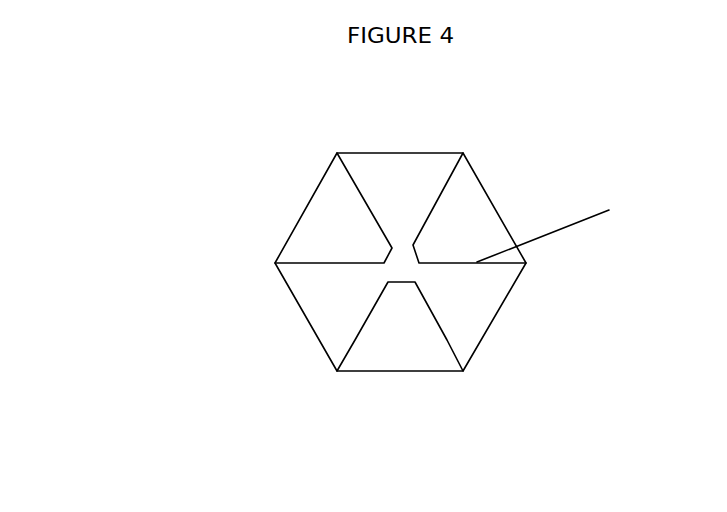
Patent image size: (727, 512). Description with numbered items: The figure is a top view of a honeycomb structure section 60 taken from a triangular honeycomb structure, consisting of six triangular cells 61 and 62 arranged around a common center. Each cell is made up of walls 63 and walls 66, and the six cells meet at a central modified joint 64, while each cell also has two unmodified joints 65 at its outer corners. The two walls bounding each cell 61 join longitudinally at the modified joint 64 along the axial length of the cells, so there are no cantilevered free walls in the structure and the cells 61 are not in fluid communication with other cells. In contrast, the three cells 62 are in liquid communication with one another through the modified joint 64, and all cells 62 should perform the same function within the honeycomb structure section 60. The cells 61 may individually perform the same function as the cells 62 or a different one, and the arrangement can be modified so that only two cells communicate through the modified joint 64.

The honeycomb structure section 60 is at (185, 225).
The triangular cell 61 is at (400, 262).
The triangular cell 62 is at (407, 250).
The wall 63 is at (362, 192).
The modified joint 64 is at (397, 265).
The unmodified joint 65 is at (275, 263).
The wall 66 is at (312, 198).